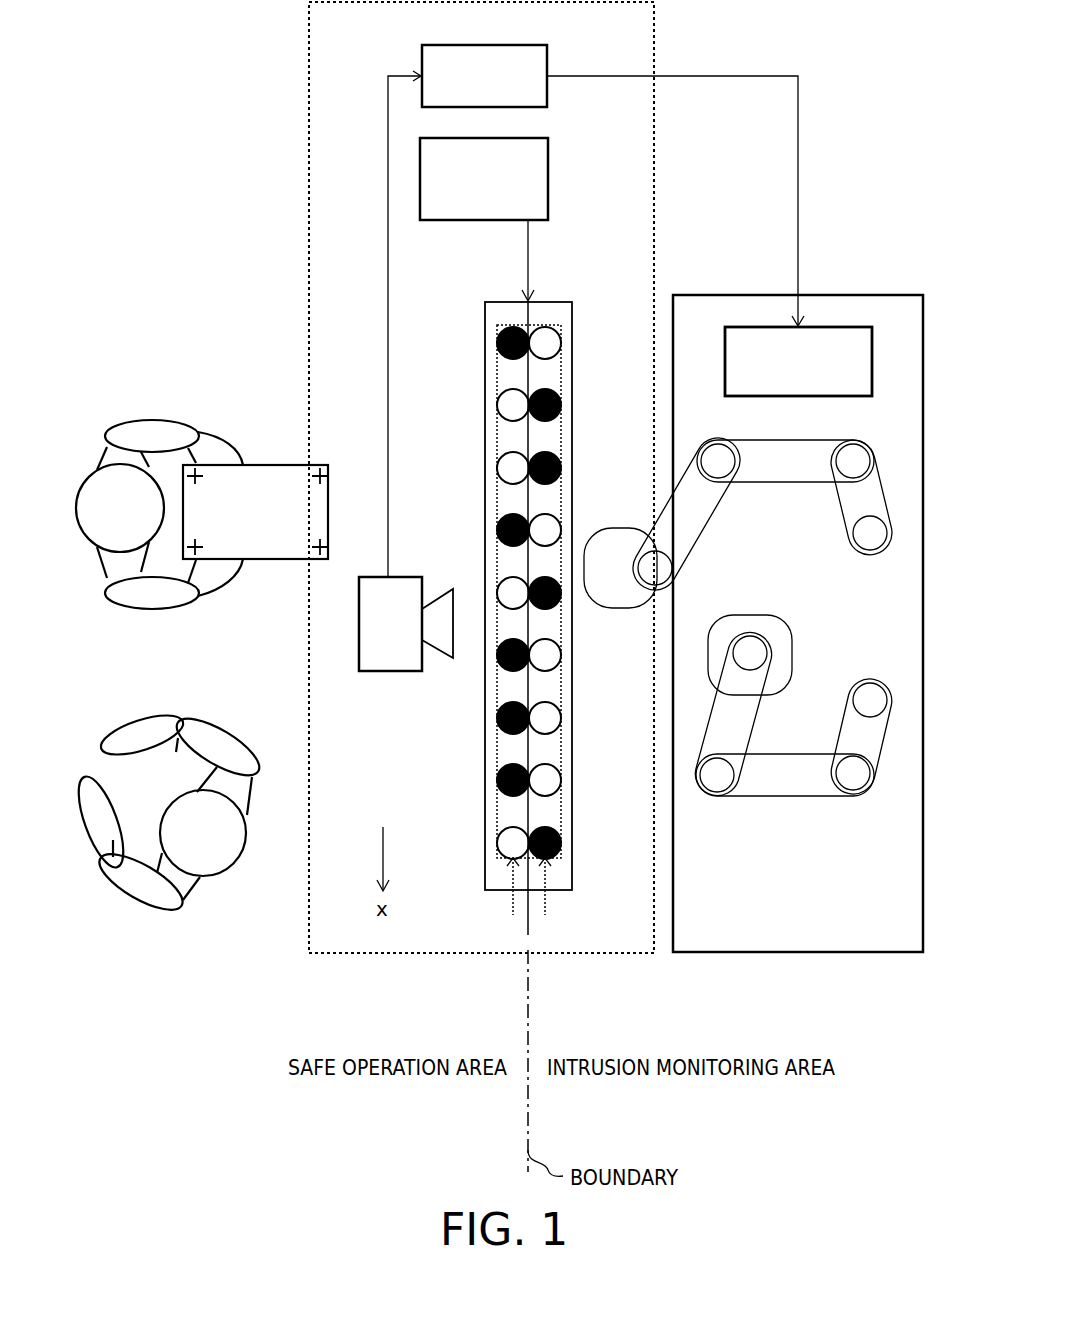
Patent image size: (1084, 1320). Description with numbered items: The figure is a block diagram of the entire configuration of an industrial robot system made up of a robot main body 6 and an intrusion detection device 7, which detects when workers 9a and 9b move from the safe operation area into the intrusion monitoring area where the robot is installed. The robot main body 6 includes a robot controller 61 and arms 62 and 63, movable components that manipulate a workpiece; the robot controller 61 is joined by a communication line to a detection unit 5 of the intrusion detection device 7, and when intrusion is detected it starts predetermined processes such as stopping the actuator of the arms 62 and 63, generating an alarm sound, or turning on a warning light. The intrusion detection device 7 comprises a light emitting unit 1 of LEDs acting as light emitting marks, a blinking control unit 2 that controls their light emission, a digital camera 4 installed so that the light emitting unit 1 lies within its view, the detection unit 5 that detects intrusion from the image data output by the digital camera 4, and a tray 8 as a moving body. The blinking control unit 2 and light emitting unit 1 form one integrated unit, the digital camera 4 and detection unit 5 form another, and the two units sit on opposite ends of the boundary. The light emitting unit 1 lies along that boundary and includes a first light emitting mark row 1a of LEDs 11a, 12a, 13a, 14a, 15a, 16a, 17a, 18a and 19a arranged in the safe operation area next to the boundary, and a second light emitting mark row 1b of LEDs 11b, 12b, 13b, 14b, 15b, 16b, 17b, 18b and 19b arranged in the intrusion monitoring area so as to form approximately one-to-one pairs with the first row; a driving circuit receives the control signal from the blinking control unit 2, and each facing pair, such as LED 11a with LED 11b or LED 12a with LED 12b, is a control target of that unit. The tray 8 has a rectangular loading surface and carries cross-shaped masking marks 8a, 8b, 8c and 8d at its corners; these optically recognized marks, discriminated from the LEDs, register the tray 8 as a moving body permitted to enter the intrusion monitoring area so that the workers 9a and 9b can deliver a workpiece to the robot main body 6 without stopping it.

The light emitting unit 1 is at (548, 302).
The first light emitting mark row 1a is at (508, 899).
The second light emitting mark row 1b is at (551, 899).
The blinking control unit 2 is at (550, 135).
The digital camera 4 is at (368, 672).
The detection unit 5 is at (550, 44).
The robot main body 6 is at (828, 295).
The intrusion detection device 7 is at (308, 151).
The tray 8 is at (283, 465).
The masking mark 8a is at (312, 472).
The masking mark 8b is at (318, 560).
The masking mark 8c is at (203, 545).
The masking mark 8d is at (203, 474).
The worker 9a is at (157, 420).
The worker 9b is at (165, 720).
The LED 11a is at (497, 343).
The LED 11b is at (562, 343).
The LED 12a is at (497, 405).
The LED 12b is at (562, 405).
The LED 13a is at (497, 468).
The LED 13b is at (562, 468).
The LED 14a is at (497, 530).
The LED 14b is at (562, 532).
The LED 15a is at (497, 597).
The LED 15b is at (556, 600).
The LED 16a is at (497, 657).
The LED 16b is at (560, 655).
The LED 17a is at (497, 718).
The LED 17b is at (562, 718).
The LED 18a is at (497, 780).
The LED 18b is at (562, 780).
The LED 19a is at (497, 843).
The LED 19b is at (562, 843).
The robot controller 61 is at (813, 327).
The arm 62 is at (705, 525).
The arm 63 is at (778, 797).